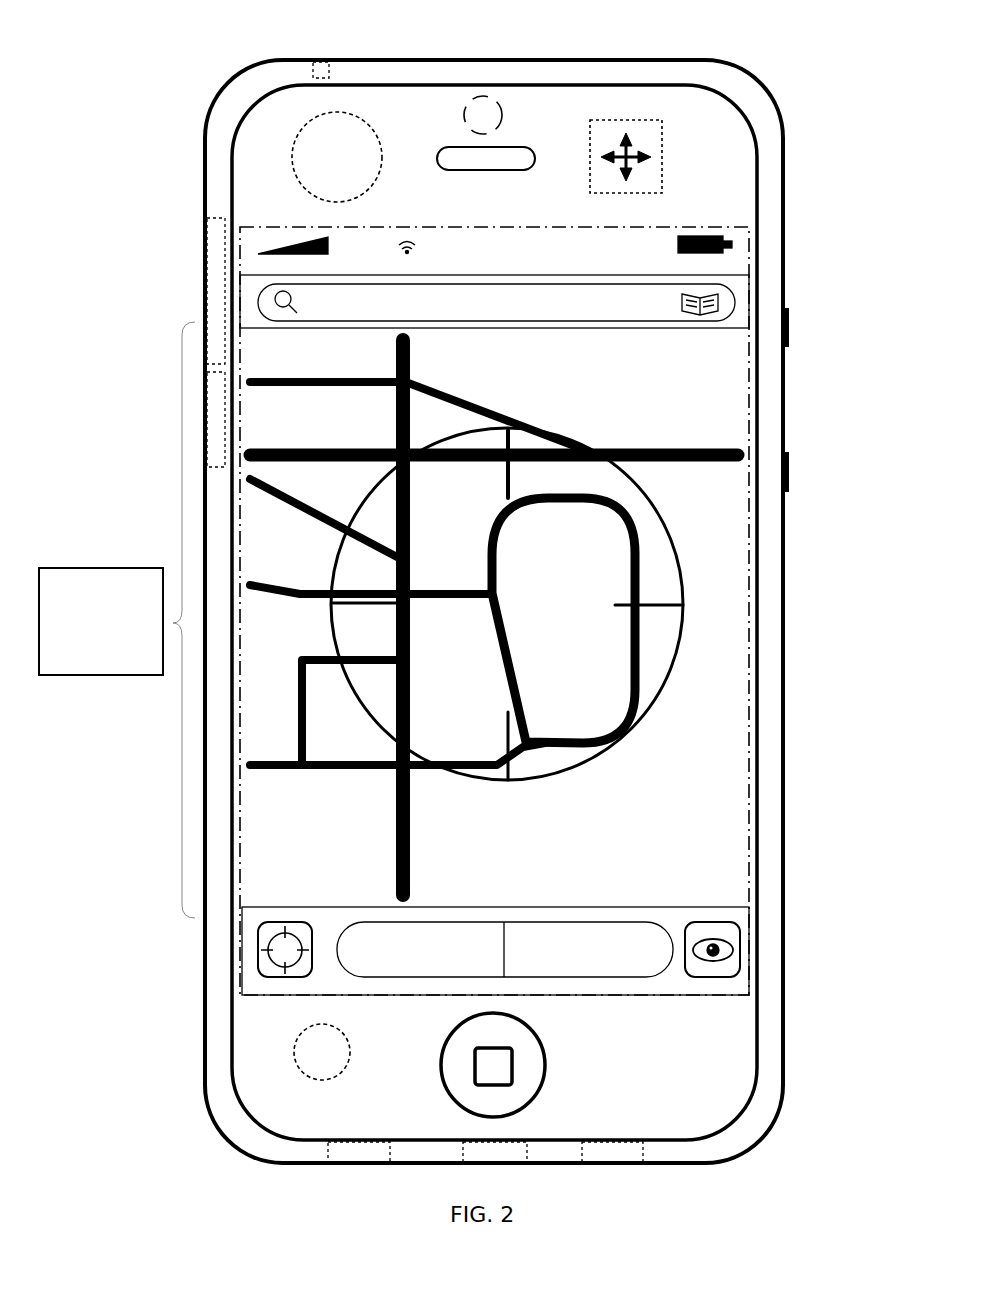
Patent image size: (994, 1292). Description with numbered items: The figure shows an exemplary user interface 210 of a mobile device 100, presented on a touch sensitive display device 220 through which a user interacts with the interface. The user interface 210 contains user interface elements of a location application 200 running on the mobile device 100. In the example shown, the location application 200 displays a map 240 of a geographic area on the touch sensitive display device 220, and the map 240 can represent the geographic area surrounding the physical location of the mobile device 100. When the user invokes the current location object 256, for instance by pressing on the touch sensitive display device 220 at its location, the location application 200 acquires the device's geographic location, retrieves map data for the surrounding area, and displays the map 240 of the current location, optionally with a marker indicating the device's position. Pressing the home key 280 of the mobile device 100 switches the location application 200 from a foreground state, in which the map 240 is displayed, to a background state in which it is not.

The mobile device 100 is at (775, 98).
The location application 200 is at (84, 658).
The user interface 210 is at (713, 578).
The touch sensitive display device 220 is at (748, 796).
The map 240 is at (713, 386).
The current location object 256 is at (305, 977).
The home key 280 is at (545, 1063).